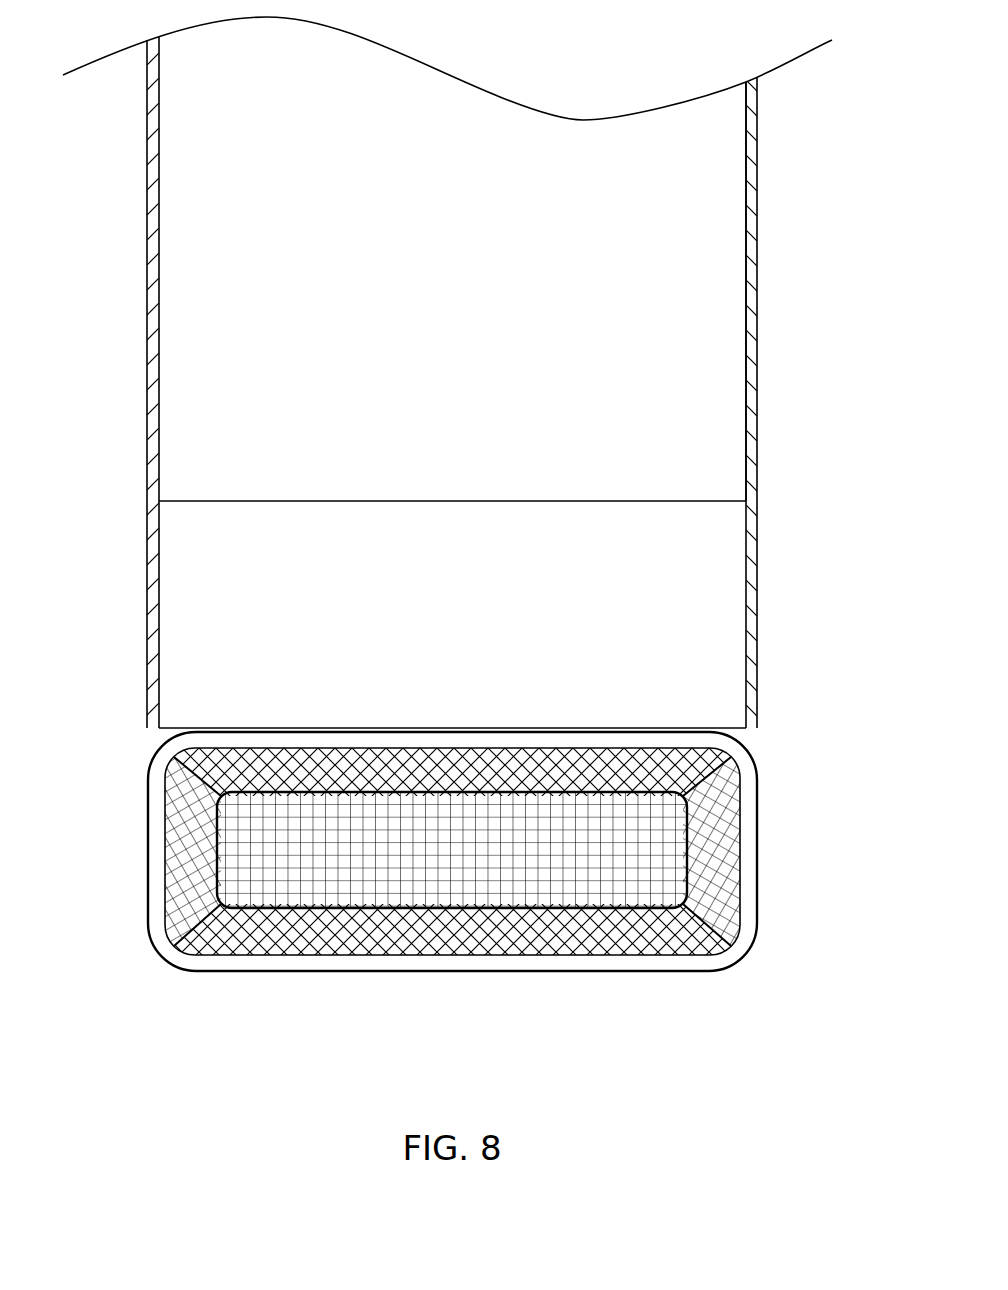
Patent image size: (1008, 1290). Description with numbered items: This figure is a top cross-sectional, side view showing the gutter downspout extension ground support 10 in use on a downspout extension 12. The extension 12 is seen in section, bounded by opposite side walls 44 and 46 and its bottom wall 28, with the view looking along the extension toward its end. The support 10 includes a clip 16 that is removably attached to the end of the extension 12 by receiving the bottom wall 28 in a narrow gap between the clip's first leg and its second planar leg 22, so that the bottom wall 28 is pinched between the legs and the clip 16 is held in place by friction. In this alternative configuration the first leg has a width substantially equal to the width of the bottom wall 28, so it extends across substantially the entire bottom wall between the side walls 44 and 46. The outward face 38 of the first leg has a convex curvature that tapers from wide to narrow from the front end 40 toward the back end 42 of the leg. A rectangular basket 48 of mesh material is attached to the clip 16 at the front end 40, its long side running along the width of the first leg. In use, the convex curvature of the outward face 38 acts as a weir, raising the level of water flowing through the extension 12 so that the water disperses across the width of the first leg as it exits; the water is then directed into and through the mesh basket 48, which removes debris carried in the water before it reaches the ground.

The gutter downspout extension ground support 10 is at (273, 398).
The downspout extension 12 is at (758, 180).
The clip 16 is at (168, 623).
The second planar leg 22 is at (688, 586).
The bottom wall 28 is at (714, 354).
The outward face 38 is at (425, 628).
The front end 40 is at (287, 640).
The back end 42 is at (476, 500).
The side wall 44 is at (147, 370).
The side wall 46 is at (758, 262).
The basket 48 is at (297, 971).